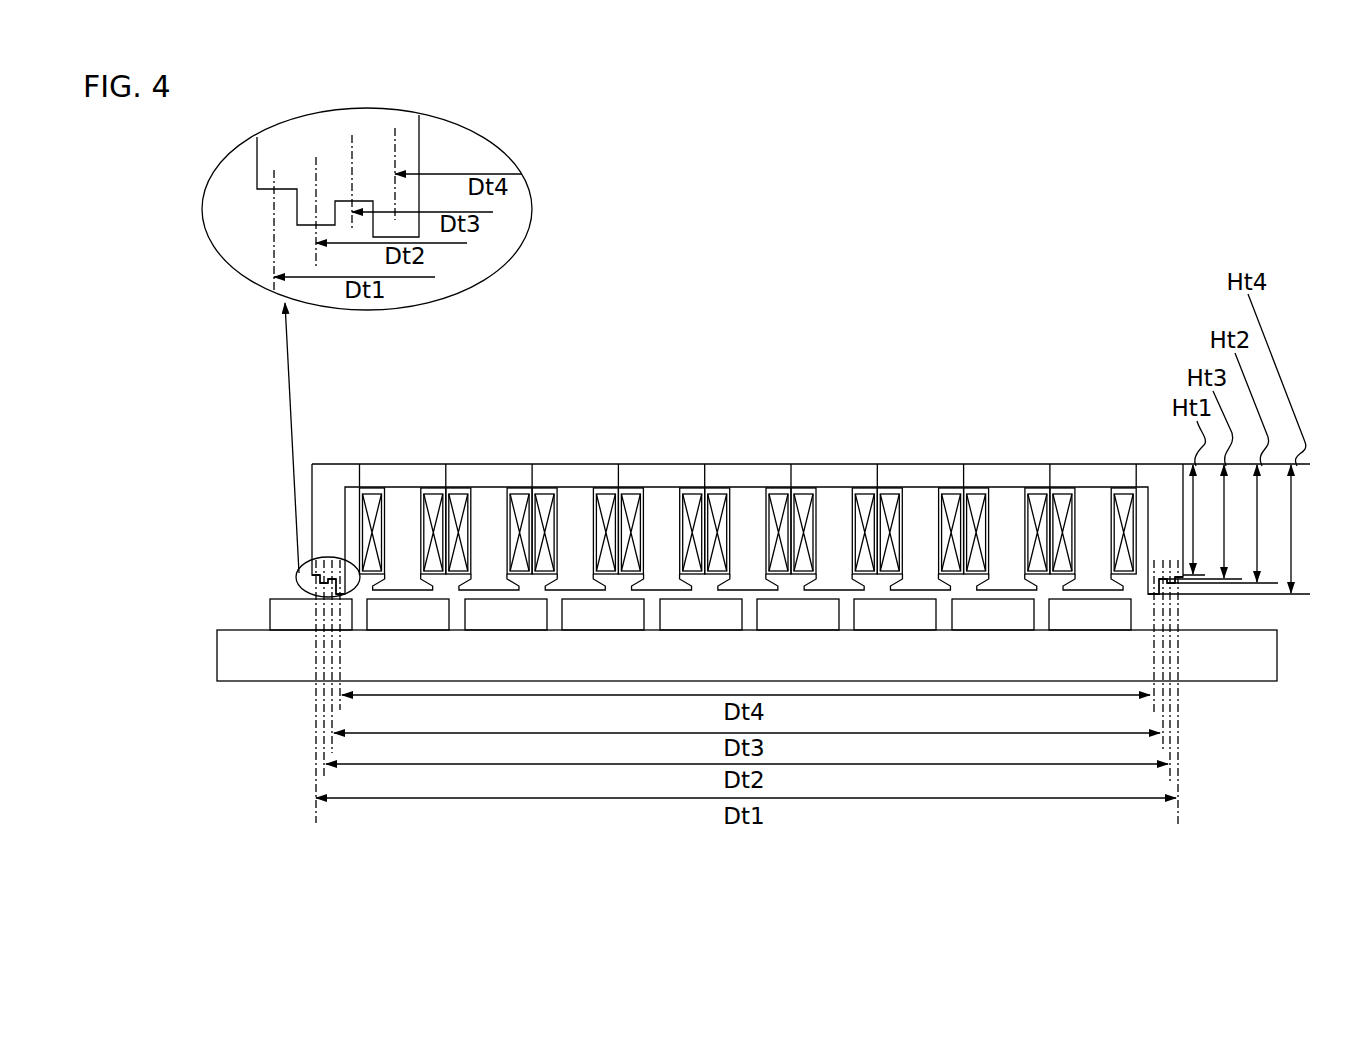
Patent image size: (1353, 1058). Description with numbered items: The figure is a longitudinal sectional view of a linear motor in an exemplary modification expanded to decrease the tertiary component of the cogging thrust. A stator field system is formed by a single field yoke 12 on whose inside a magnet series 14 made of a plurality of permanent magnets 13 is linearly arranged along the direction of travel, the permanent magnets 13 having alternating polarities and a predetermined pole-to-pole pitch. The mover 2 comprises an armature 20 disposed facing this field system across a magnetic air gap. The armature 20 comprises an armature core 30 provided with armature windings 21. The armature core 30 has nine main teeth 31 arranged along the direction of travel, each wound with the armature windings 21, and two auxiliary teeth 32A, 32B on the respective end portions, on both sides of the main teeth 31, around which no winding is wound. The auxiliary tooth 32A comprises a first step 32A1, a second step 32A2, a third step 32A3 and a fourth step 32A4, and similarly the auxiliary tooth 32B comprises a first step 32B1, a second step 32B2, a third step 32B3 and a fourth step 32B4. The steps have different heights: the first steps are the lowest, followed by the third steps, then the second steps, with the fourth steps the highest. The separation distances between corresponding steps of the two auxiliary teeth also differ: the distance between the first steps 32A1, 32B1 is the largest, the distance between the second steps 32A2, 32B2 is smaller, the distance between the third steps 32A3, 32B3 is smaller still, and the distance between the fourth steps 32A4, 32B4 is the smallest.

The mover 2 is at (771, 550).
The field yoke 12 is at (1268, 645).
The permanent magnet 13 is at (695, 618).
The magnet series 14 is at (258, 620).
The armature 20 is at (771, 550).
The armature winding 21 is at (542, 503).
The armature core 30 is at (771, 550).
The main tooth 31 is at (483, 530).
The auxiliary tooth 32A is at (314, 562).
The first step 32A1 is at (303, 588).
The second step 32A2 is at (323, 585).
The third step 32A3 is at (333, 592).
The fourth step 32A4 is at (342, 594).
The auxiliary tooth 32B is at (1208, 563).
The first step 32B1 is at (1180, 586).
The second step 32B2 is at (1172, 592).
The third step 32B3 is at (1164, 592).
The fourth step 32B4 is at (1157, 592).